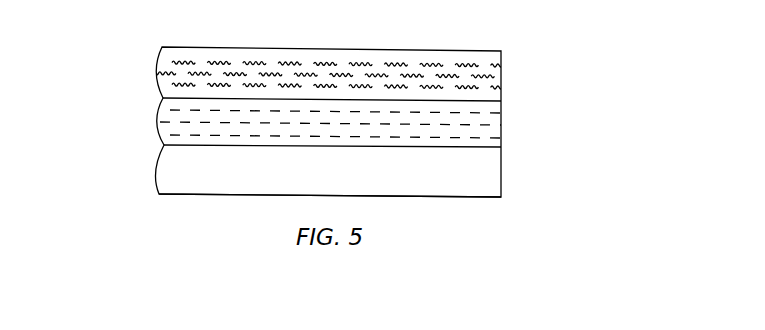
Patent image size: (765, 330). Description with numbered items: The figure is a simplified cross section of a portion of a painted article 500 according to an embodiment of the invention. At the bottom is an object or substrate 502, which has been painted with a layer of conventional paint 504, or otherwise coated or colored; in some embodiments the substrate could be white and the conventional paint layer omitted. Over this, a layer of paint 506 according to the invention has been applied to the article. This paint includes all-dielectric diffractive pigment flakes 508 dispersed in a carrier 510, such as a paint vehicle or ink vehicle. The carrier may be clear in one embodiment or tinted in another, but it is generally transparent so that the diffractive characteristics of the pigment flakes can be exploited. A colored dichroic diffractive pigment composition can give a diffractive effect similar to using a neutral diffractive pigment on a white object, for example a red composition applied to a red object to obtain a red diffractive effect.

The article 500 is at (78, 68).
The substrate 502 is at (157, 174).
The layer of conventional paint 504 is at (158, 123).
The layer of paint 506 is at (157, 74).
The all-dielectric diffractive pigment flakes 508 is at (468, 64).
The carrier 510 is at (497, 92).